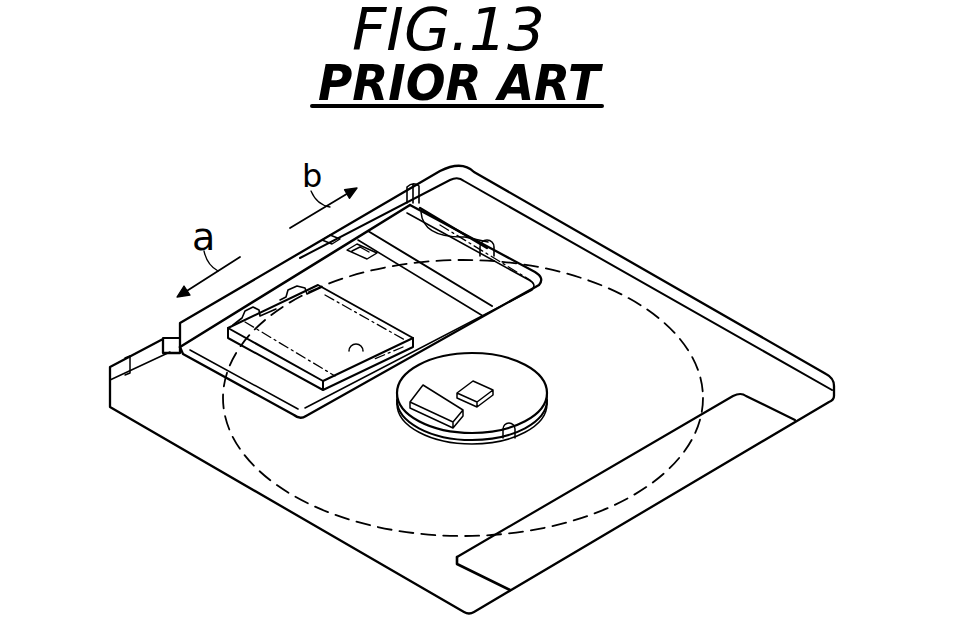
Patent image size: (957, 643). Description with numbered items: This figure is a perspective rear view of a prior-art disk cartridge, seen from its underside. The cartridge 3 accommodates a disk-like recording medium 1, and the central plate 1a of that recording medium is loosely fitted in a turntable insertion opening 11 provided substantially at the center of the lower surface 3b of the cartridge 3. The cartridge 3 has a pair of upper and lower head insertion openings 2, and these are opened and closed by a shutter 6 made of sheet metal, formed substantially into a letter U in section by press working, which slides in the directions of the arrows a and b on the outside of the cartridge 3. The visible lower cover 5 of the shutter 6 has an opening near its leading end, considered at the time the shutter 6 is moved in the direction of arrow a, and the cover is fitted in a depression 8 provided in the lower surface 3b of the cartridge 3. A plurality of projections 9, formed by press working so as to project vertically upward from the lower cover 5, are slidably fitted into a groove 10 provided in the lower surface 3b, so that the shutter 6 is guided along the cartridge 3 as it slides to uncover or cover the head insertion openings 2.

The disk-like recording medium 1 is at (655, 297).
The central plate 1a is at (513, 393).
The head insertion opening 2 is at (355, 357).
The cartridge 3 is at (762, 342).
The lower surface 3b is at (455, 558).
The lower cover 5 is at (212, 349).
The shutter 6 is at (177, 315).
The depression 8 is at (495, 250).
The projection 9 is at (240, 318).
The groove 10 is at (481, 224).
The turntable insertion opening 11 is at (510, 437).